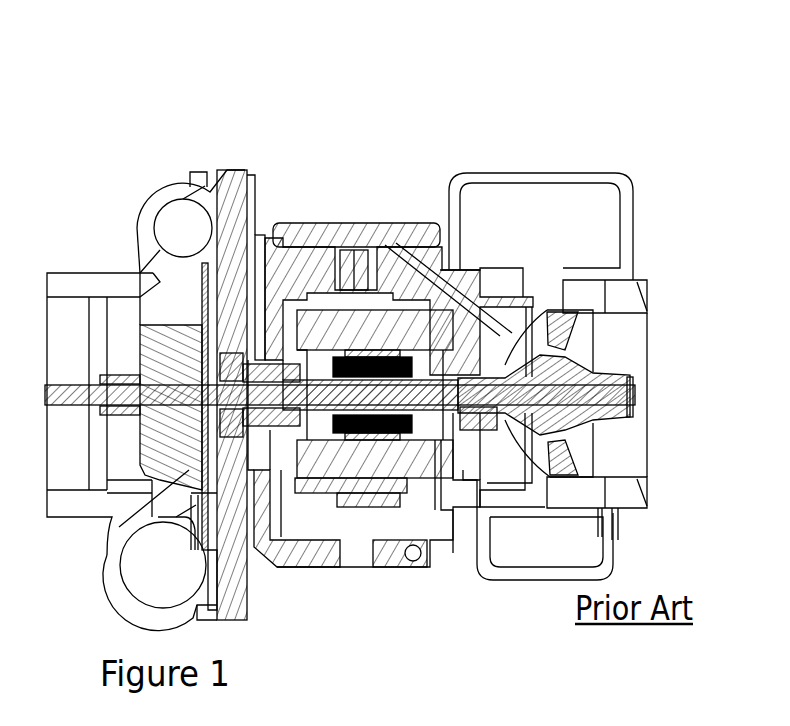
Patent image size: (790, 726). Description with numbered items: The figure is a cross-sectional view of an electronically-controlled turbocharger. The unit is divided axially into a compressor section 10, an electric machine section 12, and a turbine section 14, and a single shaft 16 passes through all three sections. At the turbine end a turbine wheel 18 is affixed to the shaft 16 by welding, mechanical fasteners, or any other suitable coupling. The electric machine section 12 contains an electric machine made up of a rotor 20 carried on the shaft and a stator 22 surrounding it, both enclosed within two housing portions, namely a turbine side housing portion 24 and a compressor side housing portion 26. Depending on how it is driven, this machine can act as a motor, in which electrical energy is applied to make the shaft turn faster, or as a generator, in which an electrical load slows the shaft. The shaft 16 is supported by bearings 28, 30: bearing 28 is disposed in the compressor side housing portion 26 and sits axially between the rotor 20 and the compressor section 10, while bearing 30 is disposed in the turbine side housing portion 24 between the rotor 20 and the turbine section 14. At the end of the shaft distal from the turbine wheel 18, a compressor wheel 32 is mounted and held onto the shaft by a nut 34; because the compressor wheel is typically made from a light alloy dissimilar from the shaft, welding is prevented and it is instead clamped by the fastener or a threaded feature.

The compressor section 10 is at (136, 178).
The electric machine section 12 is at (367, 170).
The turbine section 14 is at (602, 158).
The shaft 16 is at (303, 397).
The turbine wheel 18 is at (612, 398).
The rotor 20 is at (410, 428).
The stator 22 is at (333, 332).
The turbine side housing portion 24 is at (397, 240).
The compressor side housing portion 26 is at (260, 233).
The bearing 28 is at (265, 420).
The bearing 30 is at (477, 415).
The compressor wheel 32 is at (158, 360).
The nut 34 is at (112, 380).